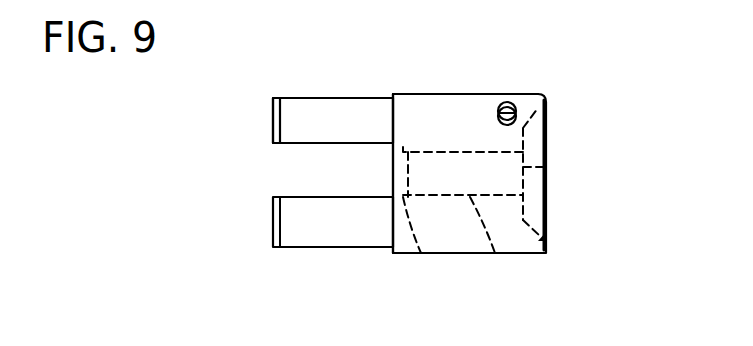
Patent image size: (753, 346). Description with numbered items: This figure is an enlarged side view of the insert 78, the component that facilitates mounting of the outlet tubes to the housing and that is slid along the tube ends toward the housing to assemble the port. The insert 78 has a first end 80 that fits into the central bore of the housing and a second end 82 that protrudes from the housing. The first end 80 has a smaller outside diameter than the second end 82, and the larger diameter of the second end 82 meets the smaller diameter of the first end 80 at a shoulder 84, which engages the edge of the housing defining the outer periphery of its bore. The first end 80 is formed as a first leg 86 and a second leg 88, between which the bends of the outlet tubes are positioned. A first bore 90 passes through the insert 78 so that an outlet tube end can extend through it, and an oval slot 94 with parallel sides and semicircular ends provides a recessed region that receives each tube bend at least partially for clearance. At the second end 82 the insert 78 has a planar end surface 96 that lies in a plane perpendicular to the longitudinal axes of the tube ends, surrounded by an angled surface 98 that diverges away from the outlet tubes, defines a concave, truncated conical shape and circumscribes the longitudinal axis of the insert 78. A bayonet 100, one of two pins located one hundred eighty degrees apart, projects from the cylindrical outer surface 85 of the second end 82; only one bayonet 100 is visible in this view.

The insert 78 is at (182, 188).
The first end 80 is at (325, 97).
The second end 82 is at (484, 94).
The shoulder 84 is at (388, 94).
The cylindrical outer surface 85 is at (452, 94).
The first leg 86 is at (273, 122).
The second leg 88 is at (273, 225).
The first bore 90 is at (495, 253).
The slot 94 is at (421, 253).
The planar end surface 96 is at (550, 163).
The angled surface 98 is at (550, 221).
The bayonet 100 is at (515, 100).